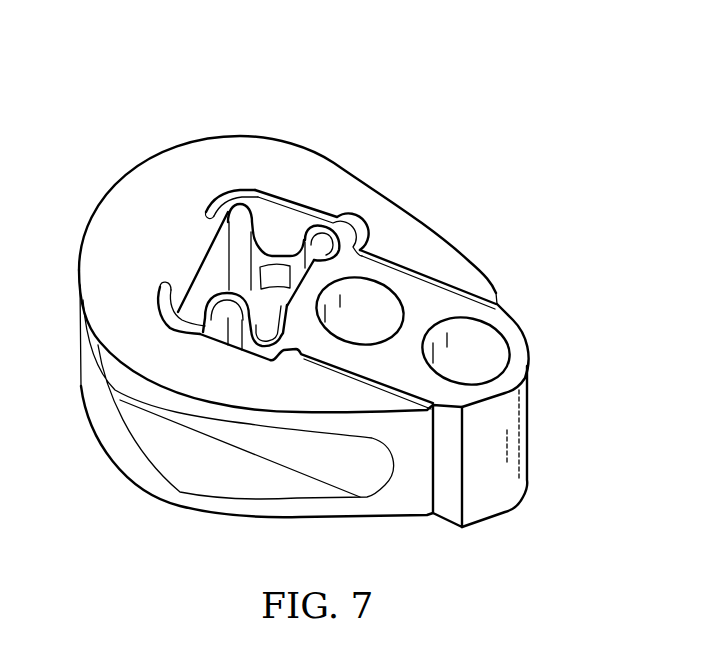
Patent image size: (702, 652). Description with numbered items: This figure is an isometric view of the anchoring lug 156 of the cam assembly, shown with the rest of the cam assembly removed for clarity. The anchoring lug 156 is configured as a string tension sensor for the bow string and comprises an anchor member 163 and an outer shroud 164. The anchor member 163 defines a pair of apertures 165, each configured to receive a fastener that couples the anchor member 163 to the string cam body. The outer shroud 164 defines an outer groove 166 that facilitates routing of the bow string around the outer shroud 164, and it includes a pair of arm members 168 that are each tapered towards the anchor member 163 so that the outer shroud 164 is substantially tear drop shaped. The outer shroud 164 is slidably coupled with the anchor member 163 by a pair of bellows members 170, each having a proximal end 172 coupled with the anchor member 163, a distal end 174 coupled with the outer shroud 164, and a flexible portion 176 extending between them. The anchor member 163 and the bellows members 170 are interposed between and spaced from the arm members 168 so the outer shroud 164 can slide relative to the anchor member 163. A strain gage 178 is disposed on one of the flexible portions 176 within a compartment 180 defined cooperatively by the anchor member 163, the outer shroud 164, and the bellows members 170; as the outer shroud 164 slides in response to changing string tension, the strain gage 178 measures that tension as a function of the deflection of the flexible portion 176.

The anchoring lug 156 is at (90, 76).
The anchor member 163 is at (524, 425).
The outer shroud 164 is at (186, 142).
The apertures 165 is at (395, 312).
The outer groove 166 is at (198, 472).
The arm members 168 is at (400, 214).
The bellows members 170 is at (208, 338).
The proximal end 172 is at (338, 228).
The distal end 174 is at (206, 194).
The flexible portion 176 is at (292, 230).
The strain gage 178 is at (268, 276).
The compartment 180 is at (240, 215).